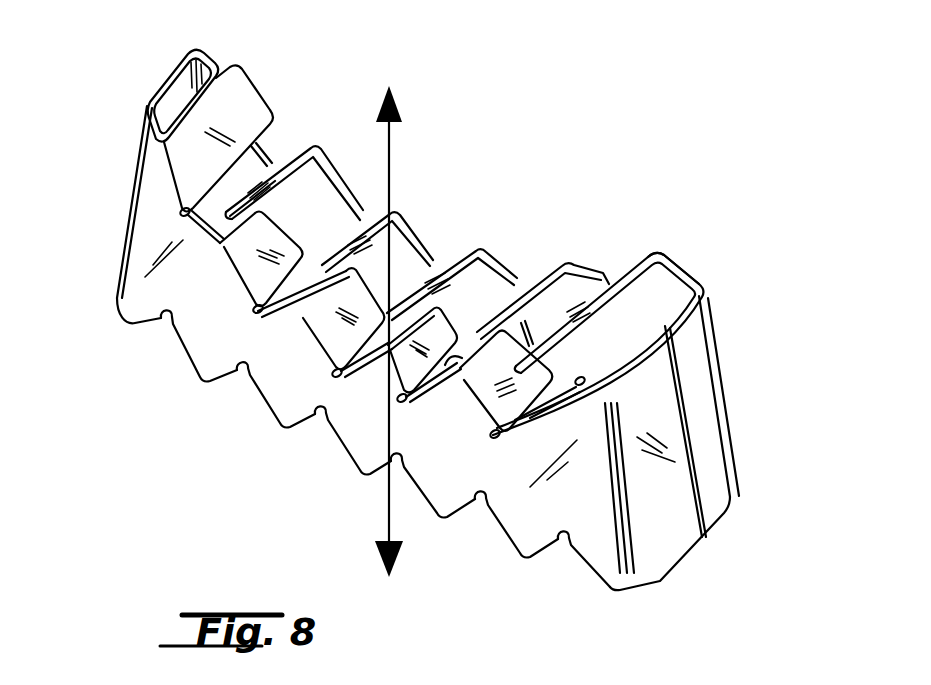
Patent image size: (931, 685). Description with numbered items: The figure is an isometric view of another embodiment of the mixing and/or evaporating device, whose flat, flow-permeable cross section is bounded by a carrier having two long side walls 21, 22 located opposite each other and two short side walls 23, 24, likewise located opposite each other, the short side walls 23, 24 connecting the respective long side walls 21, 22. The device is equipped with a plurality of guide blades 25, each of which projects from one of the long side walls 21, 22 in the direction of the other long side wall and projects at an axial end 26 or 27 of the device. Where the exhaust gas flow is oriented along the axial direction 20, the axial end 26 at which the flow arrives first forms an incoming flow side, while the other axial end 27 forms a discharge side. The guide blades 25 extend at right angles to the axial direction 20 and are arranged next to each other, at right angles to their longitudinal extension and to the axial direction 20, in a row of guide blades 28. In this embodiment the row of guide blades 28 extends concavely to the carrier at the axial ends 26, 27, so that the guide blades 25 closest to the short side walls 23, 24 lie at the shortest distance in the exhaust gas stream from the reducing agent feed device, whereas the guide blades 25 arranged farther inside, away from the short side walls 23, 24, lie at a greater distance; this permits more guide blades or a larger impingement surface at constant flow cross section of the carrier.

The axial direction 20 is at (390, 313).
The long side wall 21 is at (692, 268).
The long side wall 22 is at (217, 355).
The short side wall 23 is at (710, 455).
The short side wall 24 is at (162, 74).
The guide blades 25 is at (537, 280).
The axial end (incoming flow side) 26 is at (656, 248).
The axial end (discharge side) 27 is at (622, 588).
The row of guide blades 28 is at (280, 170).